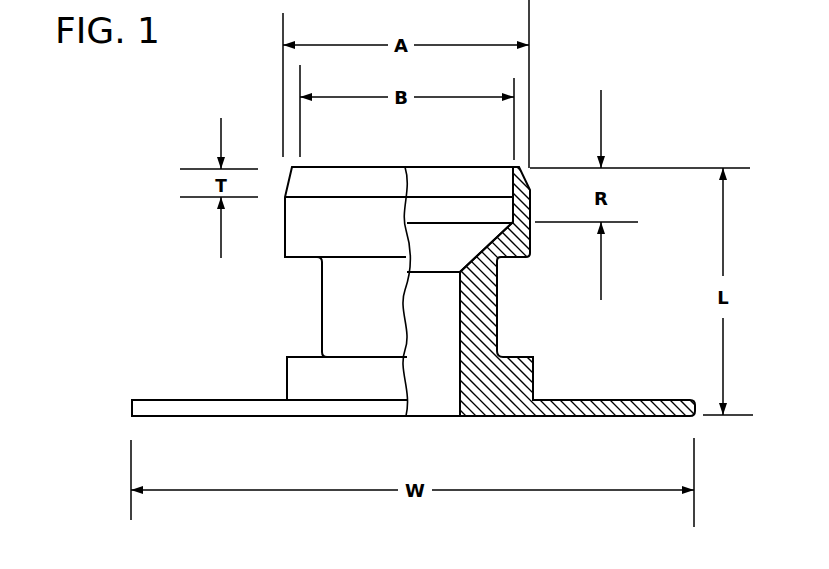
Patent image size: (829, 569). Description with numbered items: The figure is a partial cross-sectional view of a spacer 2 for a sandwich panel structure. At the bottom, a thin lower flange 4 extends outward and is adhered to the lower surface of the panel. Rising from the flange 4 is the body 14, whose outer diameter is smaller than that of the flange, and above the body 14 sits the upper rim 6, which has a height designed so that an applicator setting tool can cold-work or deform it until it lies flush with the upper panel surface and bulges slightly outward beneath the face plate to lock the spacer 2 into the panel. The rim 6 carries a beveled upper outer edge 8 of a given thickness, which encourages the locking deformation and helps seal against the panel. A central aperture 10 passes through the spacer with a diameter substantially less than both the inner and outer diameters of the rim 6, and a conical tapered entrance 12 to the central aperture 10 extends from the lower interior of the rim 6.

The spacer 2 is at (215, 256).
The lower flange 4 is at (193, 400).
The upper rim 6 is at (535, 185).
The beveled upper outer edge 8 is at (285, 183).
The central aperture 10 is at (460, 383).
The conical tapered entrance 12 is at (477, 255).
The body 14 is at (287, 357).